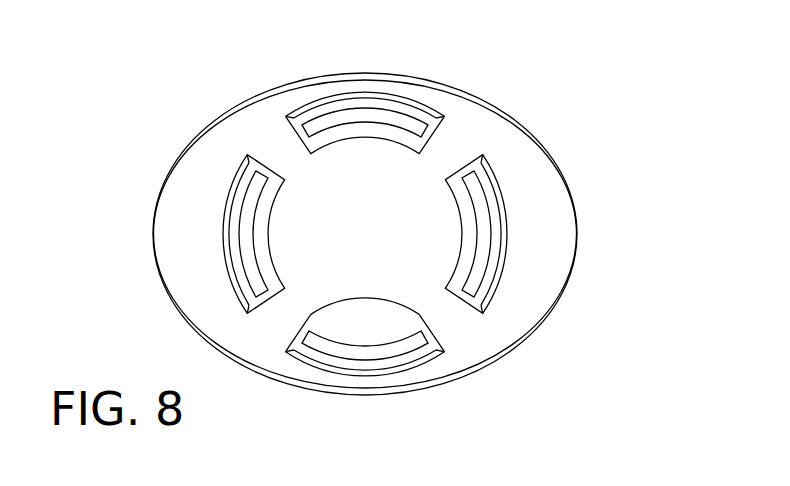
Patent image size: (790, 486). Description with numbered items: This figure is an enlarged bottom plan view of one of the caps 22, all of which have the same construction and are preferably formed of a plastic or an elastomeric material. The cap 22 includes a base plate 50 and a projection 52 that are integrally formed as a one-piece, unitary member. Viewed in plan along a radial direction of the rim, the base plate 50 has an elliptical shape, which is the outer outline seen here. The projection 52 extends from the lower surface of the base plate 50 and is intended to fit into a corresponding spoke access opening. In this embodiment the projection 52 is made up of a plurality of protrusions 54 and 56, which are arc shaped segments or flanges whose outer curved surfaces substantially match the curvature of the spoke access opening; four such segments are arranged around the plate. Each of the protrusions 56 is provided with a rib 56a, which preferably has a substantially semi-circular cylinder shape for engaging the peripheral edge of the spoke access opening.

The cap 22 is at (567, 128).
The base plate 50 is at (581, 240).
The projection 52 is at (506, 270).
The protrusion 54 is at (223, 223).
The protrusion 56 is at (414, 104).
The rib 56a is at (364, 92).